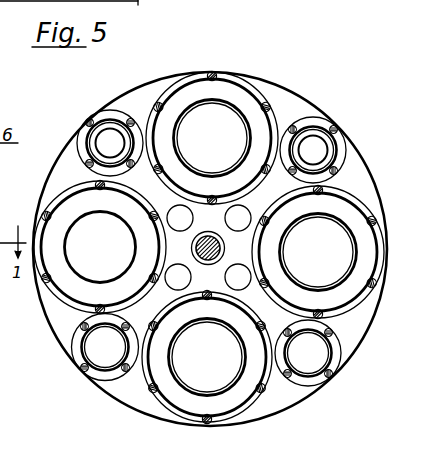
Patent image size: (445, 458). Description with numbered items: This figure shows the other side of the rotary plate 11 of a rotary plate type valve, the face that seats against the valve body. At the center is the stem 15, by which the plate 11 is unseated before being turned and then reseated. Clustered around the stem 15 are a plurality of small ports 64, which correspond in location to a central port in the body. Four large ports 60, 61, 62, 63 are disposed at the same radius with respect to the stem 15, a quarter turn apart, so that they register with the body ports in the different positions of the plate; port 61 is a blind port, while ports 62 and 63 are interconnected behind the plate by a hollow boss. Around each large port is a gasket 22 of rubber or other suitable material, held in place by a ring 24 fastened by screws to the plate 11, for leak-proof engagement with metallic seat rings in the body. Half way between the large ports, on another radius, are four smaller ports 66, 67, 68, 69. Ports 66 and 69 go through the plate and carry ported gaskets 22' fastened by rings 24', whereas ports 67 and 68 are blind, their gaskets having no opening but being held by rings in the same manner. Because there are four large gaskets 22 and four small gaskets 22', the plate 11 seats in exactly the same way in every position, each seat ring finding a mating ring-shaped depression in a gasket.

The rotary plate 11 is at (142, 405).
The stem 15 is at (211, 241).
The gaskets 22 is at (83, 247).
The ported gaskets 22' is at (79, 250).
The rings 24 is at (88, 258).
The rings 24' is at (75, 245).
The port 60 is at (220, 113).
The blind port 61 is at (87, 227).
The port 62 is at (218, 380).
The port 63 is at (337, 272).
The small ports 64 is at (245, 274).
The port 66 is at (313, 142).
The blind port 67 is at (308, 368).
The blind port 68 is at (102, 362).
The port 69 is at (110, 133).